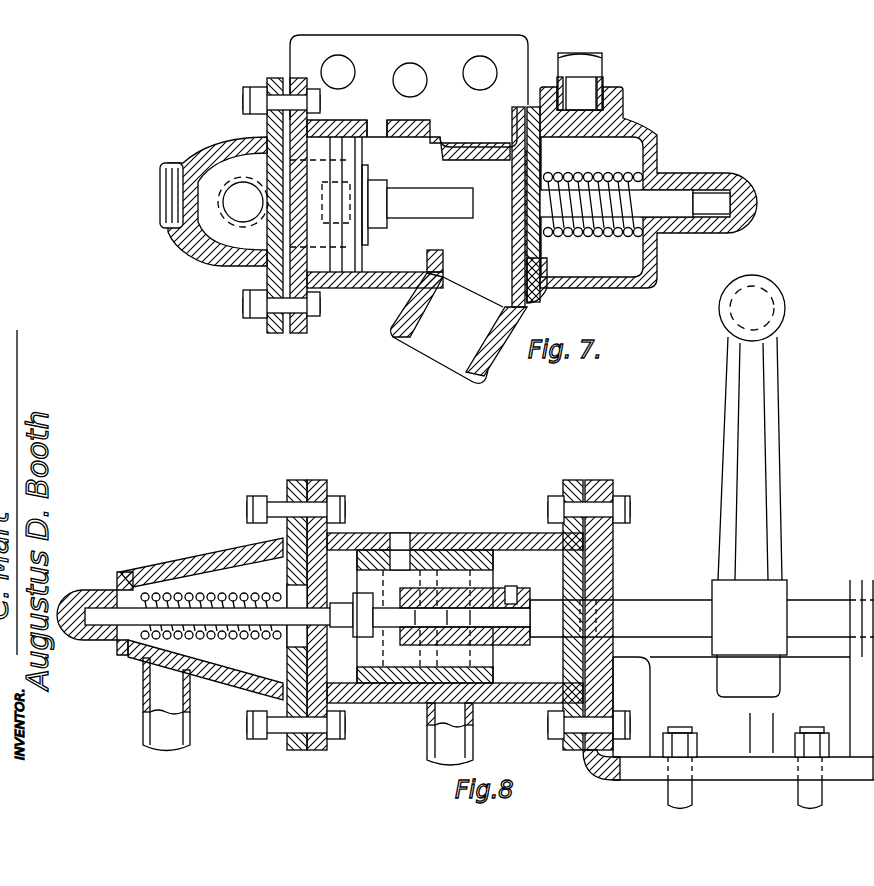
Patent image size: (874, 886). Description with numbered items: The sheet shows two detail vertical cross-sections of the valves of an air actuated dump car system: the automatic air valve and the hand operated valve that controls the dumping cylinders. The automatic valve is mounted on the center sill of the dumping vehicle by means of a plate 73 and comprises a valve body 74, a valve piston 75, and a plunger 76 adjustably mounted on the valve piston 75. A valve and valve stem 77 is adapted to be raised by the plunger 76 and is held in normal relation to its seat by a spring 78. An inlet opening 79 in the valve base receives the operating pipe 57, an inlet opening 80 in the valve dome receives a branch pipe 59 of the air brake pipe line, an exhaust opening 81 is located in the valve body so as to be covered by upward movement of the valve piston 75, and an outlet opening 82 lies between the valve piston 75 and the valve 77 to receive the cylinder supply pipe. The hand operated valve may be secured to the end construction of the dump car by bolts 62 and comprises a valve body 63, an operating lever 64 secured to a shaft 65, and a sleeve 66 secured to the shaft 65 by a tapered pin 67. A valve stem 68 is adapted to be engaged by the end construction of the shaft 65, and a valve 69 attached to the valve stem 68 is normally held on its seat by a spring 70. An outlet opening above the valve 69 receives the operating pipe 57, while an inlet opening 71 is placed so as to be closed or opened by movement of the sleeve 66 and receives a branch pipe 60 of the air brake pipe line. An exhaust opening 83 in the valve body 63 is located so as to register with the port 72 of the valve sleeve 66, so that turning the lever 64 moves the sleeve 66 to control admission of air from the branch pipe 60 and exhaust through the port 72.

In FIG. 8, the operating pipe 57 is at (157, 724).
In FIG. 7, the branch pipe 59 is at (568, 73).
In FIG. 8, the branch pipe 60 is at (445, 735).
In FIG. 8, the bolts 62 is at (810, 792).
In FIG. 8, the valve body 63 is at (478, 536).
In FIG. 8, the operating lever 64 is at (770, 500).
In FIG. 8, the shaft 65 is at (668, 608).
In FIG. 8, the sleeve 66 is at (446, 548).
In FIG. 8, the tapered pin 67 is at (515, 590).
In FIG. 8, the valve stem 68 is at (339, 618).
In FIG. 8, the valve 69 is at (293, 598).
In FIG. 8, the spring 70 is at (240, 596).
In FIG. 8, the inlet opening 71 is at (480, 703).
In FIG. 8, the port 72 is at (410, 558).
In FIG. 7, the plate 73 is at (409, 91).
In FIG. 7, the valve body 74 is at (225, 262).
In FIG. 7, the valve piston 75 is at (336, 262).
In FIG. 7, the plunger 76 is at (412, 208).
In FIG. 7, the valve and valve stem 77 is at (514, 232).
In FIG. 7, the spring 78 is at (592, 238).
In FIG. 7, the inlet opening 79 is at (243, 212).
In FIG. 7, the inlet opening 80 is at (592, 96).
In FIG. 7, the exhaust opening 81 is at (390, 108).
In FIG. 7, the outlet opening 82 is at (450, 343).
In FIG. 8, the exhaust opening 83 is at (402, 532).